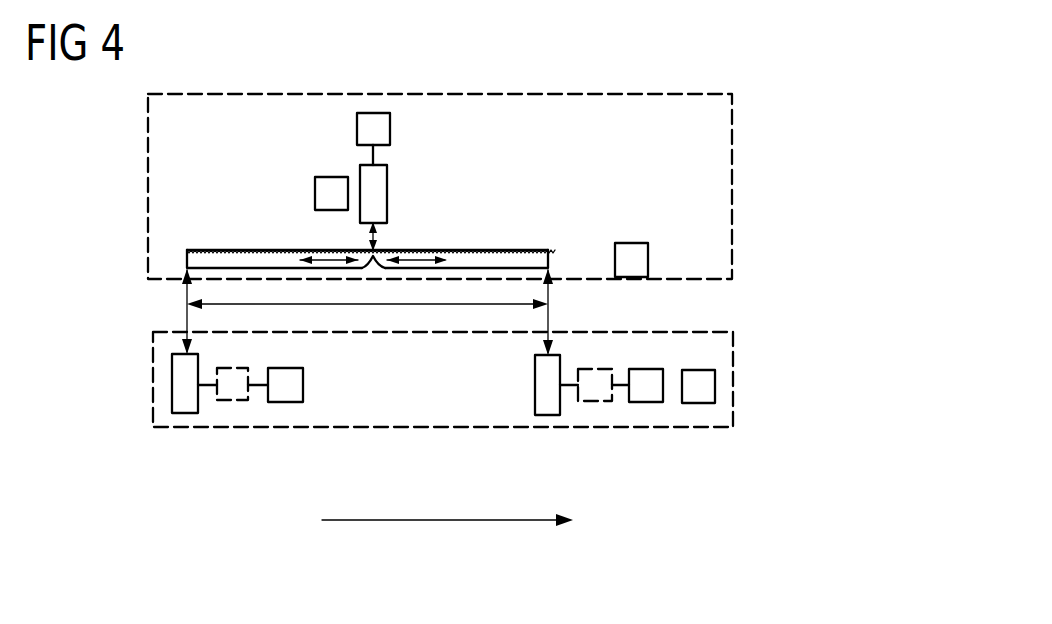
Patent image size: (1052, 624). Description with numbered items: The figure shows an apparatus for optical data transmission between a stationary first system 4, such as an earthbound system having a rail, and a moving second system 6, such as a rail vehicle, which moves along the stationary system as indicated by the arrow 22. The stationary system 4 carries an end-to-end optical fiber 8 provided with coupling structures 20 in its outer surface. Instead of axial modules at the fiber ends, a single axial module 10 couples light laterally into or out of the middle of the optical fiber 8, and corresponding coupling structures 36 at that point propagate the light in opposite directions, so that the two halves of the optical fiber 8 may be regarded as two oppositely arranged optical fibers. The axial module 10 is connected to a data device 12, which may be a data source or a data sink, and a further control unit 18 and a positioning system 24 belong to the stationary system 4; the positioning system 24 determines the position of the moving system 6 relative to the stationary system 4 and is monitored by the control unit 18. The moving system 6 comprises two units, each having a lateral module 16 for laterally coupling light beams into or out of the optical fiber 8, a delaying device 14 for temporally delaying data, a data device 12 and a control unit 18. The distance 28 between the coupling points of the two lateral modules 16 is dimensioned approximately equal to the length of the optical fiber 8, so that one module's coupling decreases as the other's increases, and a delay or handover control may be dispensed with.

The first system 4 is at (735, 188).
The second system 6 is at (153, 371).
The optical fiber 8 is at (213, 262).
The axial module 10 is at (388, 191).
The data device 12 is at (377, 113).
The delaying device 14 is at (228, 400).
The lateral module 16 is at (185, 413).
The control unit 18 is at (315, 195).
The coupling structures 20 is at (526, 250).
The arrow 22 is at (440, 522).
The positioning system 24 is at (633, 243).
The distance 28 is at (472, 307).
The coupling structures 36 is at (373, 258).